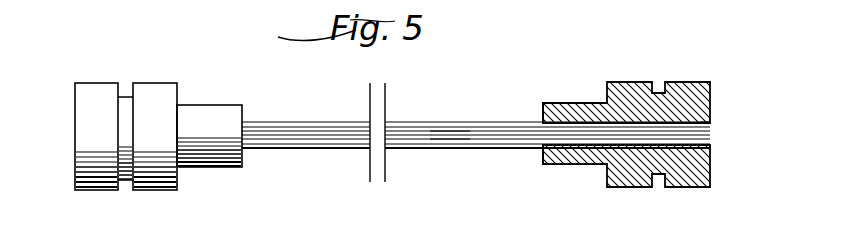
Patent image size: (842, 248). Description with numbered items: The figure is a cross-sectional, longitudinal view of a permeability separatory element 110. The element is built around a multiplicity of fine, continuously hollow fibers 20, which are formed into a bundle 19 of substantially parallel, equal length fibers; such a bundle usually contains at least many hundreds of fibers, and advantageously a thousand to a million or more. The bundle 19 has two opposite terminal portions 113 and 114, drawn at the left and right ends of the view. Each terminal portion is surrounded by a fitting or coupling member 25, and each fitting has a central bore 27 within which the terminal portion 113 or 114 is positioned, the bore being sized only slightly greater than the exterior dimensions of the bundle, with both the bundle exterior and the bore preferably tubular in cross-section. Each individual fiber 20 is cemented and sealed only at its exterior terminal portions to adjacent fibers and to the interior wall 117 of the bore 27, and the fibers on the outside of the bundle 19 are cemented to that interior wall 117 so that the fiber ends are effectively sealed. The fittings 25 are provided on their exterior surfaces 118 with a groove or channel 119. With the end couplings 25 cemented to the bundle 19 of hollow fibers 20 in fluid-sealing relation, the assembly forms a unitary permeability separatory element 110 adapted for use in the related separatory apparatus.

The bundle 19 is at (402, 130).
The hollow fibers 20 is at (441, 123).
The fitting or coupling member 25 is at (158, 84).
The central bore 27 is at (713, 131).
The permeability separatory element 110 is at (612, 81).
The terminal portion 113 is at (245, 128).
The terminal portion 114 is at (542, 118).
The interior wall 117 is at (577, 150).
The exterior surface 118 is at (82, 84).
The groove or channel 119 is at (124, 90).